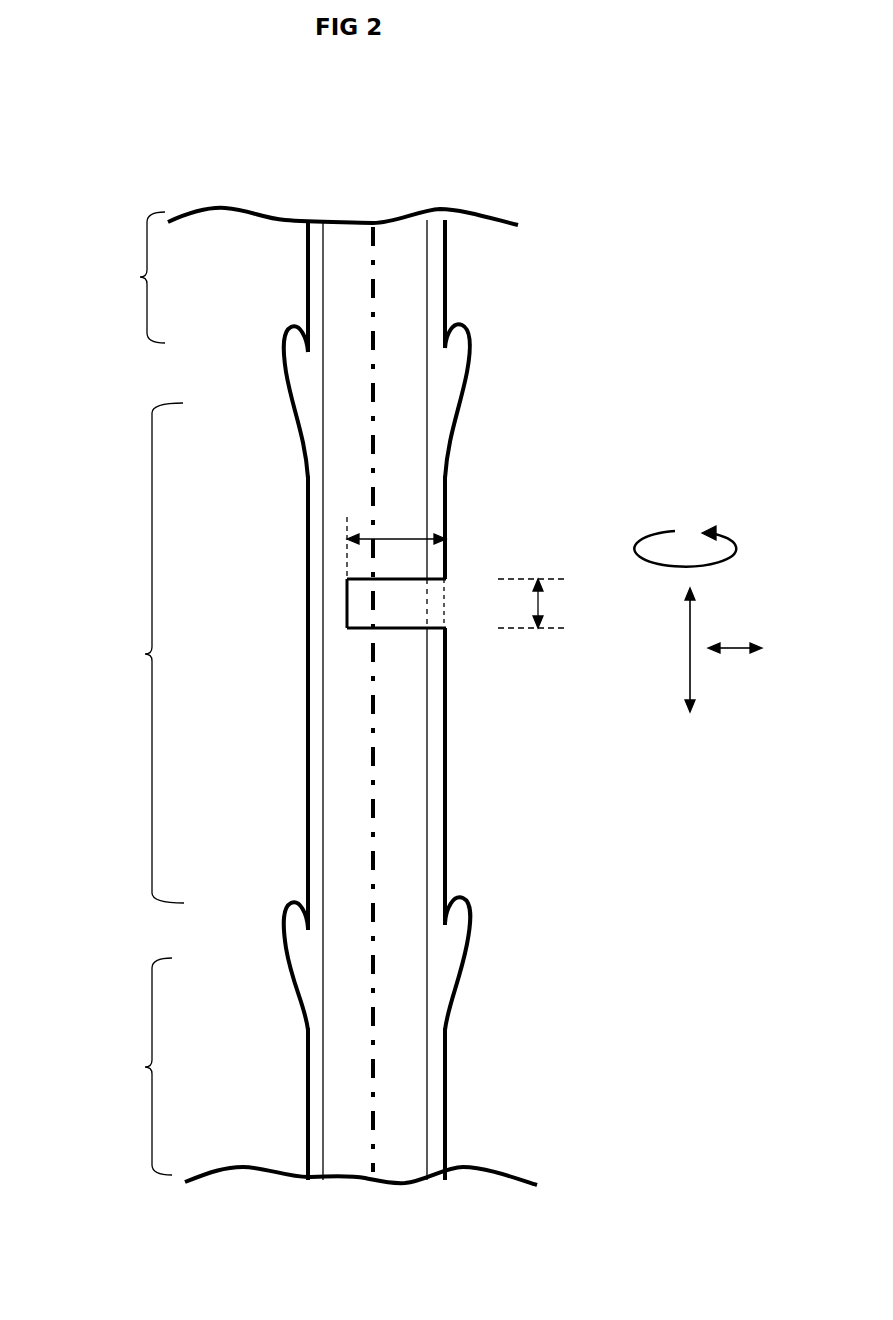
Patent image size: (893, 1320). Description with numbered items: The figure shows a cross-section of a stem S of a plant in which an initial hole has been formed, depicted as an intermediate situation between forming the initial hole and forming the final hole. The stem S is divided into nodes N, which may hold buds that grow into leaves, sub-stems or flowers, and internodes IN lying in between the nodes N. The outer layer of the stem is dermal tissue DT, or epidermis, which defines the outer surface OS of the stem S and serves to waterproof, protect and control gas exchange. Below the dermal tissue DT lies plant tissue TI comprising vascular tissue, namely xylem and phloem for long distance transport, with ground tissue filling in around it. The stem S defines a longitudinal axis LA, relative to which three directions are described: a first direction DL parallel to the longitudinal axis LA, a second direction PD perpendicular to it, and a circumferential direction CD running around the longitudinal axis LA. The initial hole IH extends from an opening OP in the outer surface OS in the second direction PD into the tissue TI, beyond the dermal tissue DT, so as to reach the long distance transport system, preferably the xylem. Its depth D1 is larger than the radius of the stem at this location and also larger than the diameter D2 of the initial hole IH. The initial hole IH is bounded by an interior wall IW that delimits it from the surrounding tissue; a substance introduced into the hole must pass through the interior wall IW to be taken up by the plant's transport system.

The longitudinal axis LA is at (372, 238).
The stem S is at (305, 260).
The dermal tissue DT is at (440, 297).
The plant tissue TI is at (400, 445).
The node N is at (244, 367).
The internode IN is at (140, 277).
The initial hole IH is at (358, 594).
The interior wall IW is at (415, 615).
The opening OP is at (452, 592).
The depth D1 is at (396, 546).
The diameter D2 is at (539, 603).
The outer surface OS is at (458, 1085).
The circumferential direction CD is at (732, 538).
The first direction DL is at (690, 663).
The second direction PD is at (733, 653).